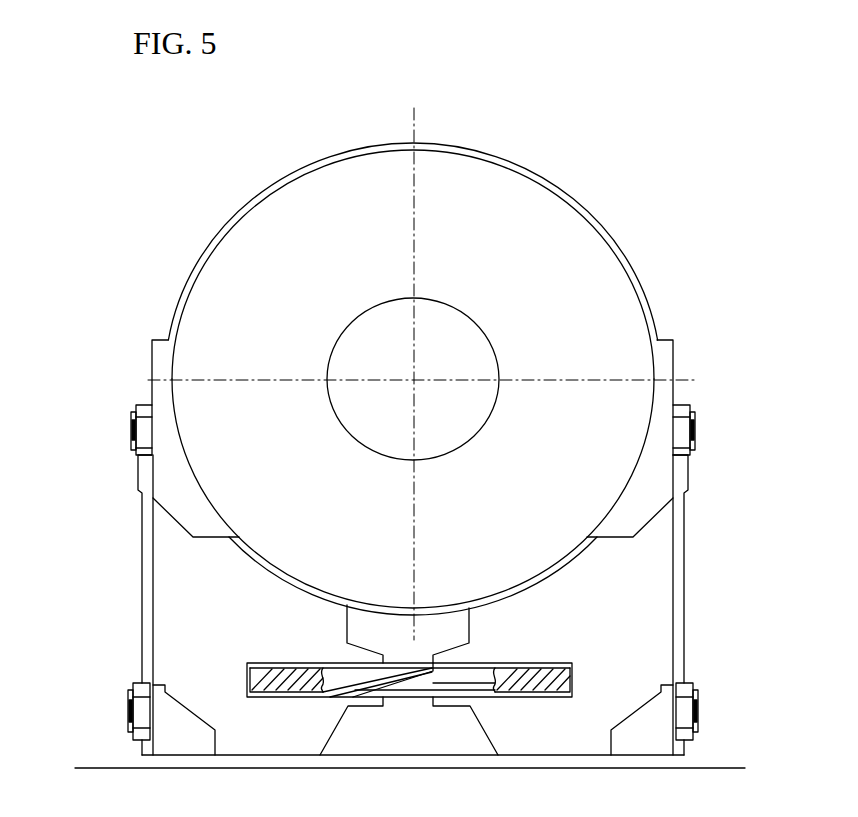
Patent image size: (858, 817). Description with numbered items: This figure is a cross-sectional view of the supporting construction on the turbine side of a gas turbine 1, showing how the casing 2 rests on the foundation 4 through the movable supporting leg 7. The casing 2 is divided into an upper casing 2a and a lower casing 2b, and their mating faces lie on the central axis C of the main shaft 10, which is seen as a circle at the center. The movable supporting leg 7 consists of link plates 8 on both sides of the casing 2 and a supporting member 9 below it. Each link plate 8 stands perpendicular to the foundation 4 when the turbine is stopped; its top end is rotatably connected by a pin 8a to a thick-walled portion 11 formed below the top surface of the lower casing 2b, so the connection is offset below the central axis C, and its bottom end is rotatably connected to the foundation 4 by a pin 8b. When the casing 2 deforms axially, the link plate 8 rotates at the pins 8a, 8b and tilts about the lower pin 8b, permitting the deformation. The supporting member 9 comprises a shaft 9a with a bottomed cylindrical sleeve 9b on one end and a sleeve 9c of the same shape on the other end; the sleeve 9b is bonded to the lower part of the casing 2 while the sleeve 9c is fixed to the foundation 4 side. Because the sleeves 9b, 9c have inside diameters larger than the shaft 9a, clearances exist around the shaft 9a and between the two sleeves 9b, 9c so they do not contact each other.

The gas turbine 1 is at (611, 192).
The casing 2 is at (188, 279).
The upper casing 2a is at (649, 307).
The lower casing 2b is at (590, 545).
The foundation 4 is at (722, 766).
The movable supporting leg 7 is at (143, 552).
The link plate 8 is at (140, 585).
The pin 8a is at (134, 428).
The pin 8b is at (130, 706).
The supporting member 9 is at (495, 662).
The shaft 9a is at (280, 662).
The sleeve 9b is at (255, 662).
The sleeve 9c is at (553, 662).
The main shaft 10 is at (466, 313).
The thick-walled portion 11 is at (168, 517).
The central axis C is at (413, 379).